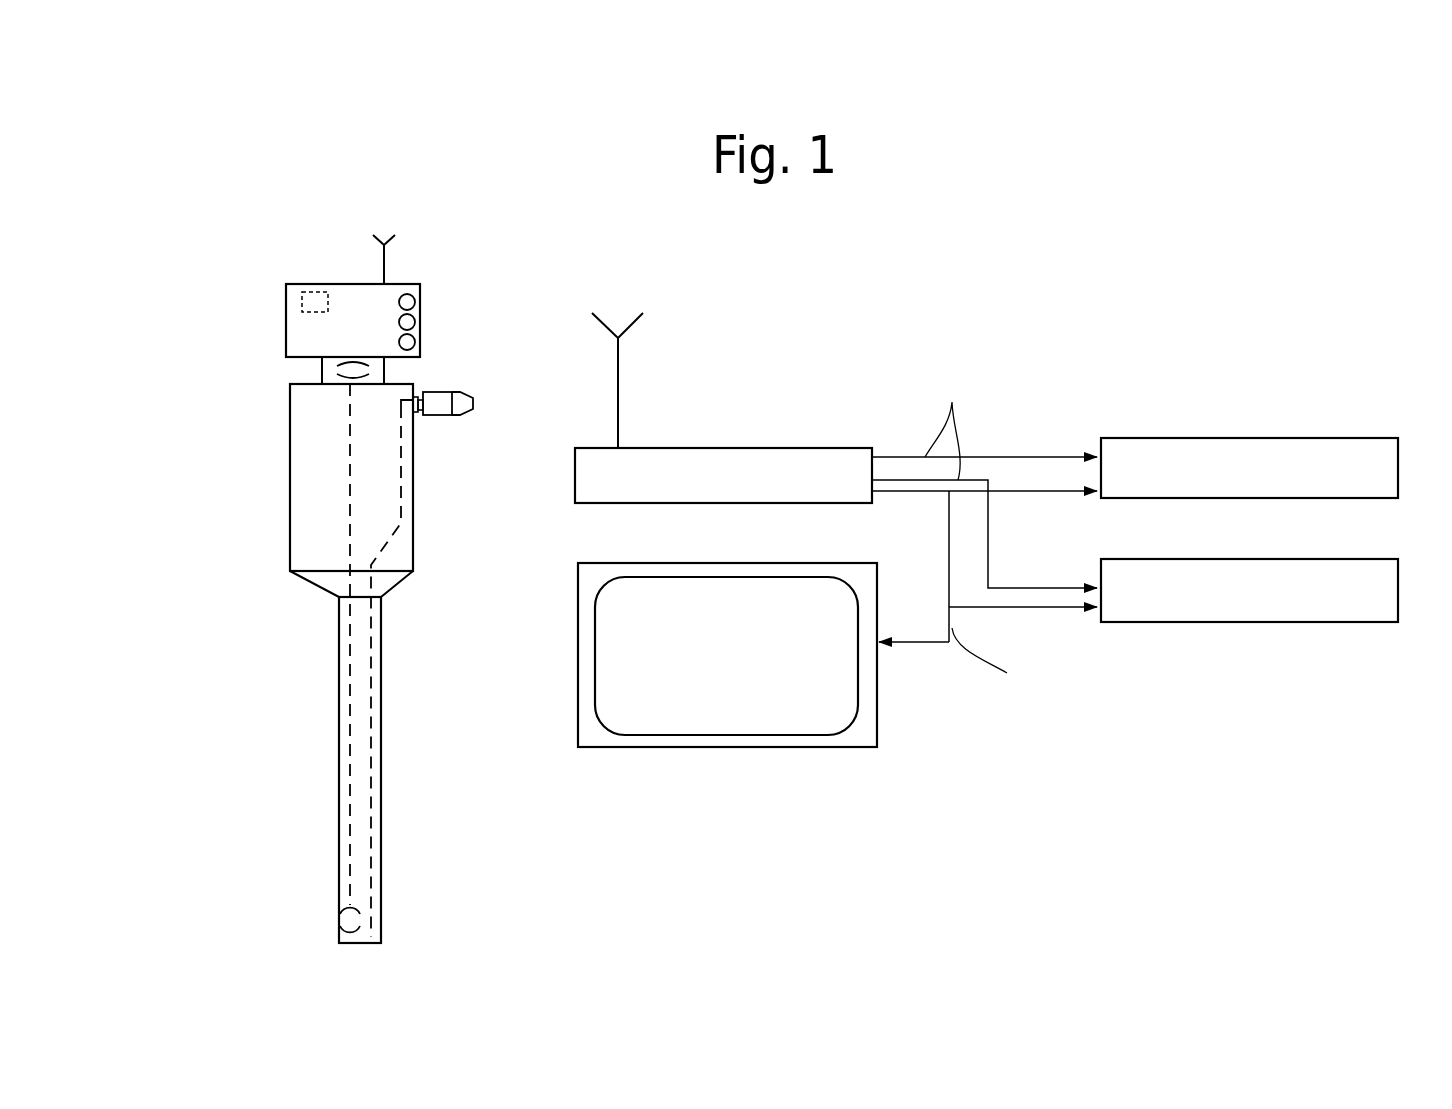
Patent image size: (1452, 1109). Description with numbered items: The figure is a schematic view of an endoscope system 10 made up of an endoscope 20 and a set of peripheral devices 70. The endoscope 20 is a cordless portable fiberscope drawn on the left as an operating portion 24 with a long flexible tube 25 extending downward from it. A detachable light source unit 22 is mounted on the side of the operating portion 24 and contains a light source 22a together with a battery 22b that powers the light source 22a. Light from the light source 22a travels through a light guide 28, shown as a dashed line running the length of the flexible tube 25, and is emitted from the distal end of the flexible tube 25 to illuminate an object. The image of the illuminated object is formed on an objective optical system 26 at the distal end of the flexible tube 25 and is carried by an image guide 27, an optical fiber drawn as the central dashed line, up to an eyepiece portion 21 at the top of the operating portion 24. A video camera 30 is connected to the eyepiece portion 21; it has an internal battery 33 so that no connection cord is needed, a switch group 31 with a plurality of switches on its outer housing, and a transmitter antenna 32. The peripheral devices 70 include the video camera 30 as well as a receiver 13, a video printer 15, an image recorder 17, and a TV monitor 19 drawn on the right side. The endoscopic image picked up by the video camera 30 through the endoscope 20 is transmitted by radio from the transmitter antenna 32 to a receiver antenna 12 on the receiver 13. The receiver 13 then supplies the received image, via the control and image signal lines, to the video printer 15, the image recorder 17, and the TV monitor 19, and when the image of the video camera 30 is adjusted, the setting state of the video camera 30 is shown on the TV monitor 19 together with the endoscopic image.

The endoscope system 10 is at (832, 237).
The receiver antenna 12 is at (618, 368).
The receiver 13 is at (788, 457).
The video printer 15 is at (1382, 458).
The image recorder 17 is at (1385, 577).
The TV monitor 19 is at (717, 718).
The endoscope 20 is at (228, 612).
The eyepiece portion 21 is at (320, 373).
The light source unit 22 is at (547, 500).
The light source 22a is at (438, 415).
The battery 22b is at (473, 412).
The operating portion 24 is at (316, 527).
The flexible tube 25 is at (339, 695).
The objective optical system 26 is at (345, 921).
The image guide 27 is at (350, 835).
The light guide 28 is at (371, 798).
The video camera 30 is at (293, 320).
The switch group 31 is at (424, 294).
The transmitter antenna 32 is at (389, 224).
The battery 33 is at (315, 297).
The peripheral devices 70 is at (1031, 341).